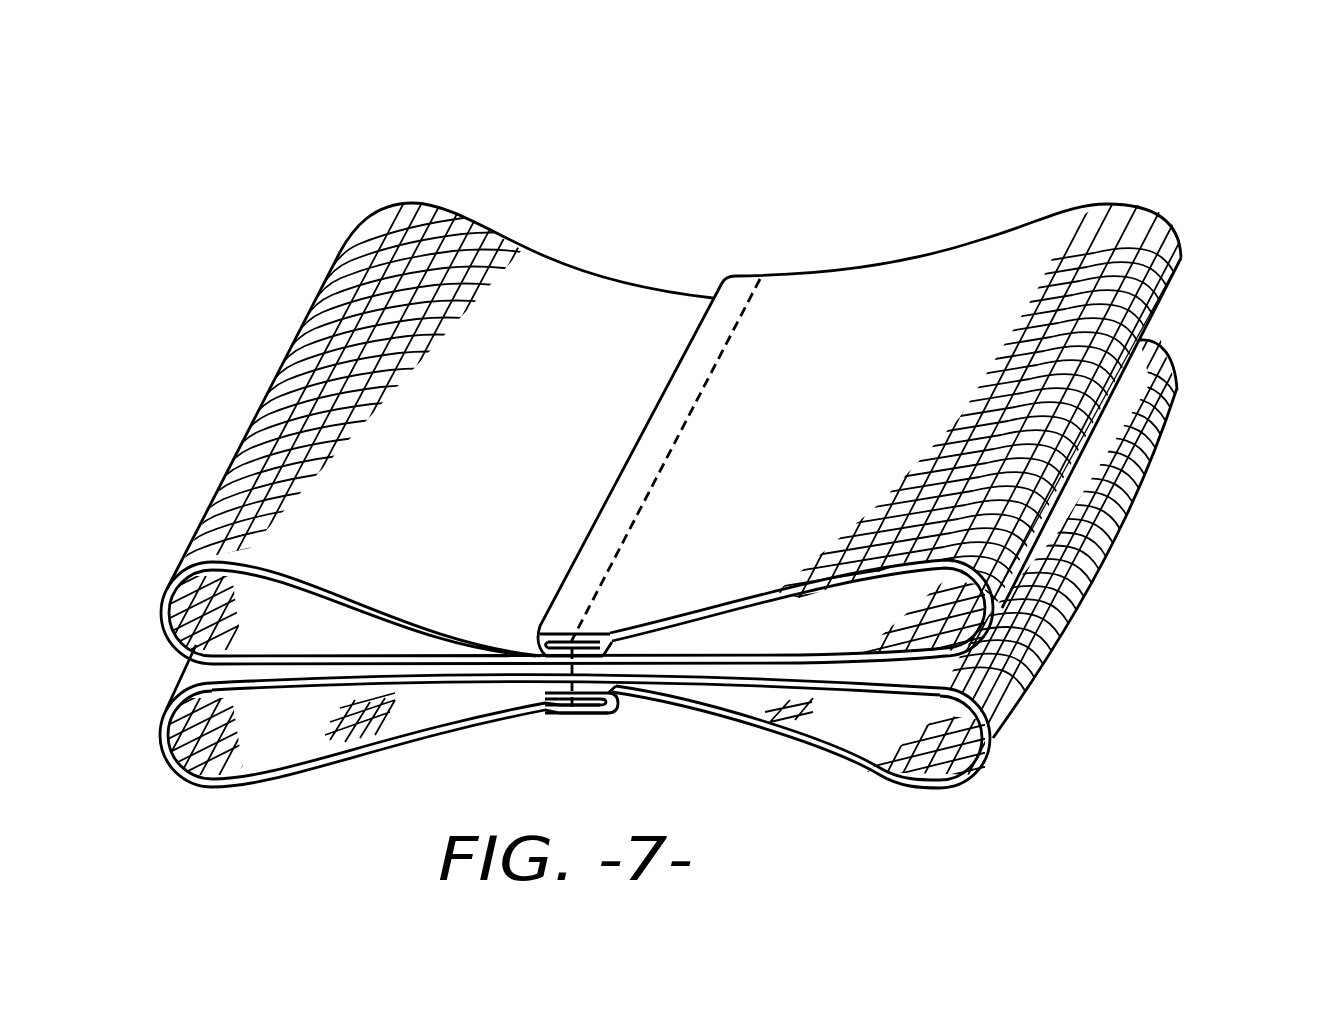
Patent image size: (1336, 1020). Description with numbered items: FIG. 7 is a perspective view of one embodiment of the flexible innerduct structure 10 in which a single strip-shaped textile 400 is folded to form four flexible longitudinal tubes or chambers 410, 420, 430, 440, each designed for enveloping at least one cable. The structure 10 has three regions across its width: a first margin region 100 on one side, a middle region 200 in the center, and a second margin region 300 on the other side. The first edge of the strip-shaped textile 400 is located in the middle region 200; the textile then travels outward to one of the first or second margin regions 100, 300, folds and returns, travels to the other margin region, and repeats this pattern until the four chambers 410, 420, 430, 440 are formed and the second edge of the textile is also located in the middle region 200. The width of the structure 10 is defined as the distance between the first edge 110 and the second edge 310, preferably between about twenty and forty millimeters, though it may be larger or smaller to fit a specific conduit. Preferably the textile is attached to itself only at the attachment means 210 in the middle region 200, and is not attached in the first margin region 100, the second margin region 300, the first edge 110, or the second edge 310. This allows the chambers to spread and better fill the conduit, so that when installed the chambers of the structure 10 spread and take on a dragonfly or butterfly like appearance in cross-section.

The innerduct structure 10 is at (185, 288).
The first margin region 100 is at (530, 150).
The first edge 110 is at (272, 183).
The middle region 200 is at (827, 228).
The attachment means 210 is at (686, 416).
The second margin region 300 is at (1213, 165).
The second edge 310 is at (1280, 226).
The strip-shaped textile 400 is at (1150, 267).
The longitudinal chamber 410 is at (288, 627).
The longitudinal chamber 420 is at (850, 640).
The longitudinal chamber 430 is at (288, 743).
The longitudinal chamber 440 is at (880, 735).